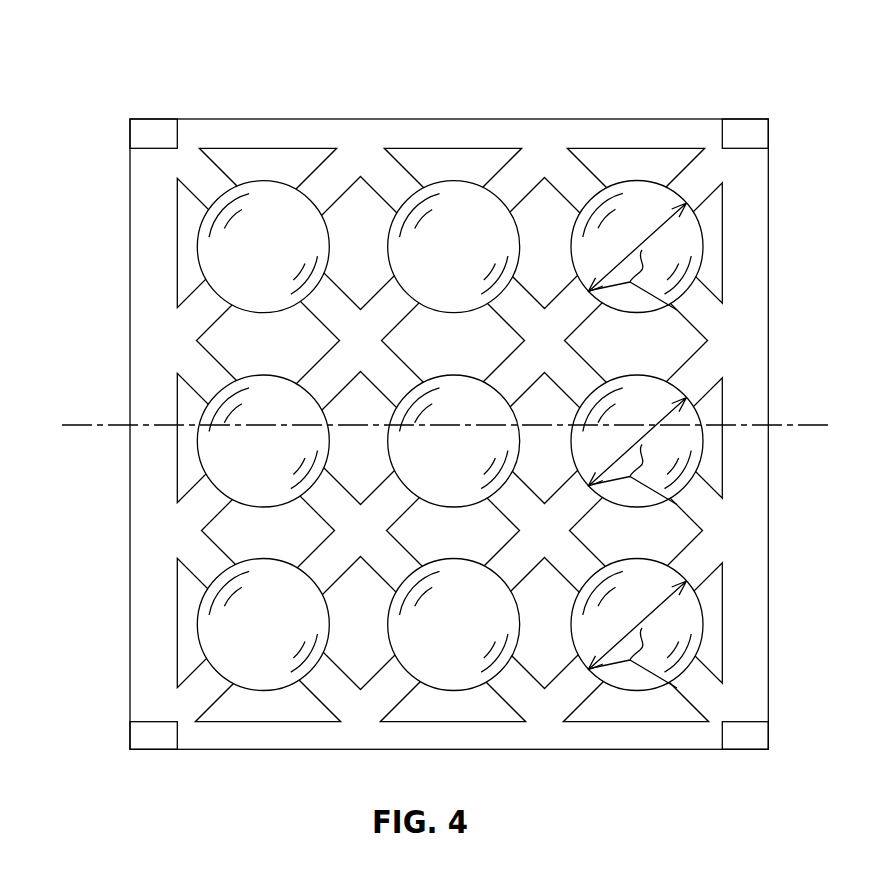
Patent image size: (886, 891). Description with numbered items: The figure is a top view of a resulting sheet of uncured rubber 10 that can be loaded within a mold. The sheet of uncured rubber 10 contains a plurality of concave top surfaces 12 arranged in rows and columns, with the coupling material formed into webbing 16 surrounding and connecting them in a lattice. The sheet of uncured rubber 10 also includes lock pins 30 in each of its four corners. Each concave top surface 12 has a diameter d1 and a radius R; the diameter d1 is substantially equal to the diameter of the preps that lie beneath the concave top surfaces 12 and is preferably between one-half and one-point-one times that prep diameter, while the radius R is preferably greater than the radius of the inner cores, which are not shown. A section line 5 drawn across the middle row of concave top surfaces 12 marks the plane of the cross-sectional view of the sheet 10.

The sheet of uncured rubber 10 is at (797, 48).
The concave top surfaces 12 is at (645, 247).
The webbing 16 is at (357, 533).
The lock pins 30 is at (162, 135).
The section line 5- 5 is at (828, 440).
The diameter of the concave top surfaces d1 is at (700, 240).
The radius of the concave top surfaces R is at (677, 310).